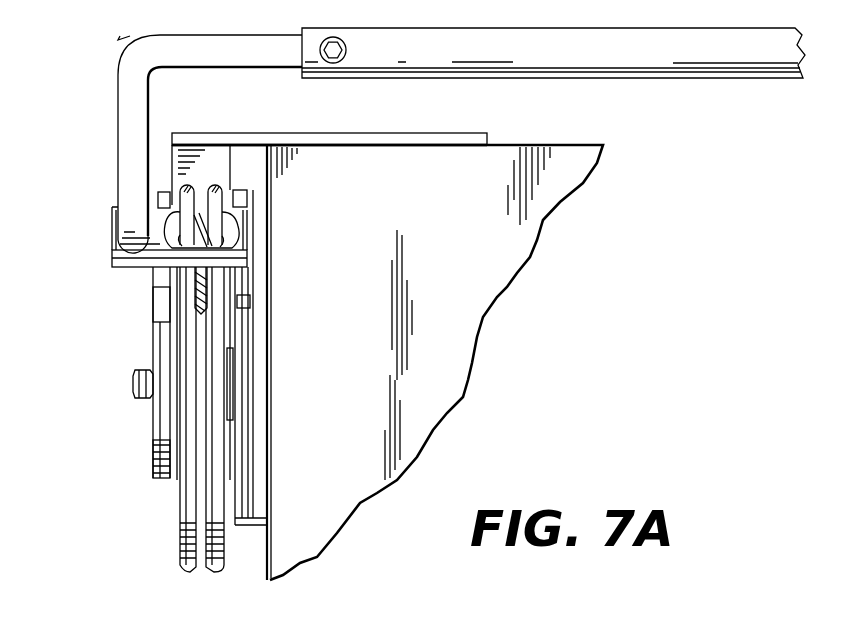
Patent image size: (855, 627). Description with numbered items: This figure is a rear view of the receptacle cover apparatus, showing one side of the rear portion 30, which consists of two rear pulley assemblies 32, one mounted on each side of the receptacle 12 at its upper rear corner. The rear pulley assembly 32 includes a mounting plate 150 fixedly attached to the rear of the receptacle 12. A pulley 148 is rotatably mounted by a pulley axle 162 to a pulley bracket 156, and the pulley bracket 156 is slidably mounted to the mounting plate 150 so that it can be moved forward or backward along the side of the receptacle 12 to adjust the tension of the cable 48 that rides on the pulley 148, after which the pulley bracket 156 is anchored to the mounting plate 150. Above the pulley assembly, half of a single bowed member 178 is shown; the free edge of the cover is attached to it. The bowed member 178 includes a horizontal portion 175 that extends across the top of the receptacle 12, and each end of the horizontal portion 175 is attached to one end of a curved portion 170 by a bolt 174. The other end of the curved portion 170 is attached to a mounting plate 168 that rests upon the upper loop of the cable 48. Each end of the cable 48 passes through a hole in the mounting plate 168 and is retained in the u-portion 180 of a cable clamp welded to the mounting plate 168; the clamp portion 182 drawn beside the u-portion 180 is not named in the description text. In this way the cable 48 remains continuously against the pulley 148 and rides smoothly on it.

The receptacle 12 is at (462, 219).
The rear portion 30 is at (90, 570).
The rear pulley assembly 32 is at (86, 395).
The cable 48 is at (215, 283).
The pulley 148 is at (183, 572).
The mounting plate 150 is at (262, 512).
The pulley bracket 156 is at (160, 480).
The pulley axle 162 is at (148, 400).
The mounting plate 168 is at (116, 241).
The curved portion 170 is at (126, 104).
The bolt 174 is at (340, 76).
The horizontal portion 175 is at (640, 65).
The bowed member 178 is at (116, 38).
The u-portion 180 is at (232, 195).
The clip 182 is at (240, 232).